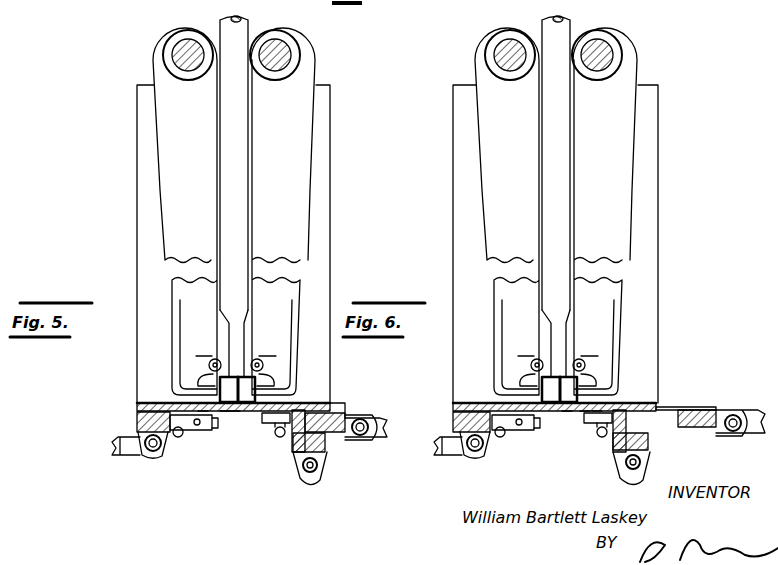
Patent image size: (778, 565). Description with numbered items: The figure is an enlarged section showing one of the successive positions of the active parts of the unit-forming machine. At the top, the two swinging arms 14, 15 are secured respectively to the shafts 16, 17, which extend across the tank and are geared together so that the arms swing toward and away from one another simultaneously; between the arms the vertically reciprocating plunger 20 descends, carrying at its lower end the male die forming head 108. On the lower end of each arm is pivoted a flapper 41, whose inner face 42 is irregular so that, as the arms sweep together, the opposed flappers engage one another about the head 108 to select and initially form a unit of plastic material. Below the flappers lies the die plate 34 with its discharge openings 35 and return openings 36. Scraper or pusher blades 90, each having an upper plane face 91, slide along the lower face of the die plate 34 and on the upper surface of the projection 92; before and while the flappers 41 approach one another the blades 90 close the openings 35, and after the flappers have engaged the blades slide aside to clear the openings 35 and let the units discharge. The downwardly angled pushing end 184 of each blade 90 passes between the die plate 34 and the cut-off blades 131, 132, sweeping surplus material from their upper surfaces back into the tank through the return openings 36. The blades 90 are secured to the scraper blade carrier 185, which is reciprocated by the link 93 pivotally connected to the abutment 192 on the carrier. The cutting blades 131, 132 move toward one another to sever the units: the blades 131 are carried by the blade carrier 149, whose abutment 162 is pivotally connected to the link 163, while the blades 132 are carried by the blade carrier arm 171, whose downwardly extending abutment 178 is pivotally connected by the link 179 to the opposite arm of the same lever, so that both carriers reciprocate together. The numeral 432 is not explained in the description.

In FIG. 5, the swinging arm 14 is at (290, 166).
In FIG. 6, the swinging arm 14 is at (631, 211).
In FIG. 5, the swinging arm 15 is at (165, 158).
In FIG. 6, the swinging arm 15 is at (478, 211).
In FIG. 5, the shaft 16 is at (290, 56).
In FIG. 6, the shaft 16 is at (617, 55).
In FIG. 5, the shaft 17 is at (177, 53).
In FIG. 6, the shaft 17 is at (481, 55).
In FIG. 5, the plunger 20 is at (250, 28).
In FIG. 6, the plunger 20 is at (582, 156).
In FIG. 5, the male die forming head 108 is at (240, 335).
In FIG. 6, the male die forming head 108 is at (516, 342).
In FIG. 5, the inner face 42 is at (200, 380).
In FIG. 6, the inner face 42 is at (538, 353).
In FIG. 5, the die plate 34 is at (292, 398).
In FIG. 6, the die plate 34 is at (555, 244).
In FIG. 5, the return opening 36 is at (200, 402).
In FIG. 6, the return opening 36 is at (584, 391).
In FIG. 5, the opening 35 is at (233, 413).
In FIG. 6, the opening 35 is at (557, 426).
In FIG. 5, the upper plane face 91 is at (240, 413).
In FIG. 6, the flapper 41 is at (546, 427).
In FIG. 5, the scraper blade 90 is at (227, 413).
In FIG. 6, the scraper blade 90 is at (568, 444).
In FIG. 5, the pushing end 184 is at (203, 423).
In FIG. 6, the bar section 432 is at (582, 453).
In FIG. 6, the projection 92 is at (593, 442).
In FIG. 5, the blade carrier 149 is at (137, 418).
In FIG. 6, the blade carrier 149 is at (451, 422).
In FIG. 5, the abutment 162 is at (140, 455).
In FIG. 6, the abutment 162 is at (442, 469).
In FIG. 5, the link 163 is at (112, 450).
In FIG. 6, the link 163 is at (449, 464).
In FIG. 5, the cutting blade 131 is at (178, 440).
In FIG. 6, the cutting blade 131 is at (507, 446).
In FIG. 5, the cutting blade 132 is at (281, 438).
In FIG. 5, the blade carrier arm 171 is at (318, 448).
In FIG. 6, the blade carrier arm 171 is at (655, 443).
In FIG. 5, the abutment 178 is at (307, 480).
In FIG. 6, the abutment 178 is at (642, 469).
In FIG. 5, the link 179 is at (308, 480).
In FIG. 6, the link 179 is at (626, 478).
In FIG. 5, the scraper blade carrier 185 is at (343, 413).
In FIG. 6, the scraper blade carrier 185 is at (693, 432).
In FIG. 5, the link 93 is at (392, 423).
In FIG. 6, the link 93 is at (740, 405).
In FIG. 5, the abutment 192 is at (357, 440).
In FIG. 6, the abutment 192 is at (736, 441).